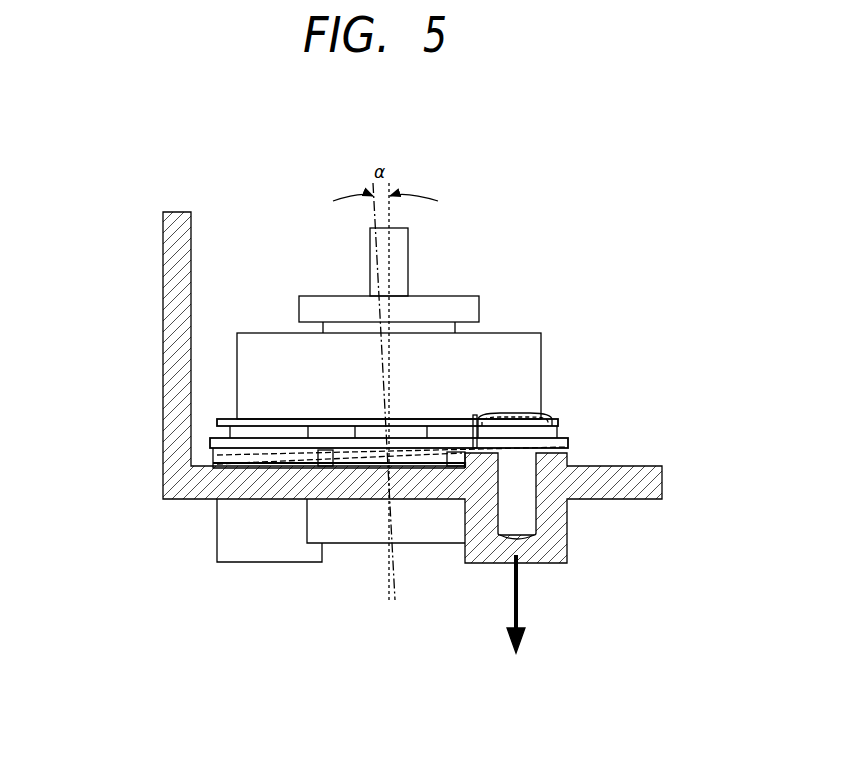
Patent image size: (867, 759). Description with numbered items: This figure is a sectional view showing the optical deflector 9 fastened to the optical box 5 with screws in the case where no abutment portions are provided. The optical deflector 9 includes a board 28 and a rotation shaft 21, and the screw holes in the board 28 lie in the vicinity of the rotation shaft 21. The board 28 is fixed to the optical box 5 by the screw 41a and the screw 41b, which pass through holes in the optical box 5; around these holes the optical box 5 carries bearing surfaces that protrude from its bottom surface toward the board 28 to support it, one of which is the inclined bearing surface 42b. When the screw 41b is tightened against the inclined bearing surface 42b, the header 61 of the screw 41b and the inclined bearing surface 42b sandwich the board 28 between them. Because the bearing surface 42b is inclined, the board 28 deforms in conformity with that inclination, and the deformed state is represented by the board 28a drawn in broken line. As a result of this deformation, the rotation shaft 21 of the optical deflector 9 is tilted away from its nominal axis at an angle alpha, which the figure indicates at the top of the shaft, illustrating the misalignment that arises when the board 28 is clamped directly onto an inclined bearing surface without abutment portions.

The optical box 5 is at (187, 488).
The optical deflector 9 is at (499, 307).
The rotation shaft 21 is at (400, 244).
The board 28 is at (215, 438).
The board (deformed, shown by broken line) 28a is at (213, 464).
The screw 41a is at (257, 430).
The screw 41b is at (527, 519).
The bearing surface 42b is at (475, 415).
The header 61 is at (525, 413).